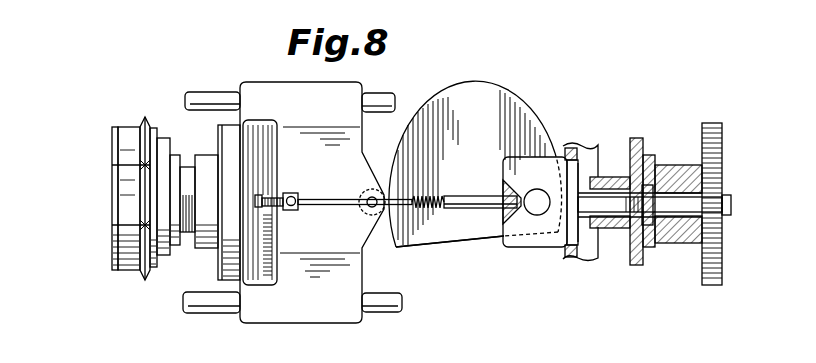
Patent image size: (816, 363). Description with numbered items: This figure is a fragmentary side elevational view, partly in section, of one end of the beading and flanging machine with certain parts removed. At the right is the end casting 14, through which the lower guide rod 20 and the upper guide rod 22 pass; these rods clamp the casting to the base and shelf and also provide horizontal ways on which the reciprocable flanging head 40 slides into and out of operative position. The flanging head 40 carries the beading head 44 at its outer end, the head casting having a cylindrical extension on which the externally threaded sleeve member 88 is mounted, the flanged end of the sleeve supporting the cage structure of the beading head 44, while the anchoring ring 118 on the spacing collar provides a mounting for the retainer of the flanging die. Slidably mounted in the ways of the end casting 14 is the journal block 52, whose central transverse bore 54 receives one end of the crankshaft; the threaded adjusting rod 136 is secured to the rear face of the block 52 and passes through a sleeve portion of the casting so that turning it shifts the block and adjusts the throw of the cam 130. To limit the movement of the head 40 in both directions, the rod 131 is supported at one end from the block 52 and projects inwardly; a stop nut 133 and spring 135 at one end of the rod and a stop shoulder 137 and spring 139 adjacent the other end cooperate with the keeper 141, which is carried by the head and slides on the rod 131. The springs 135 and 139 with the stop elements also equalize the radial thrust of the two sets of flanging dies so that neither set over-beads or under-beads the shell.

The end casting 14 is at (586, 262).
The headed guide rod 20 is at (380, 316).
The upper guide rod 22 is at (381, 98).
The reciprocable flanging head 40 is at (358, 135).
The beading head 44 is at (102, 233).
The journal block 52 is at (541, 162).
The central transverse bore 54 is at (533, 212).
The sleeve member 88 is at (186, 234).
The anchoring ring 118 is at (221, 279).
The cam 130 is at (474, 93).
The rod 131 is at (312, 206).
The stop nut 133 is at (263, 193).
The spring 135 is at (290, 193).
The threaded adjusting rod 136 is at (611, 208).
The stop shoulder 137 is at (439, 194).
The spring 139 is at (428, 208).
The keeper 141 is at (286, 211).